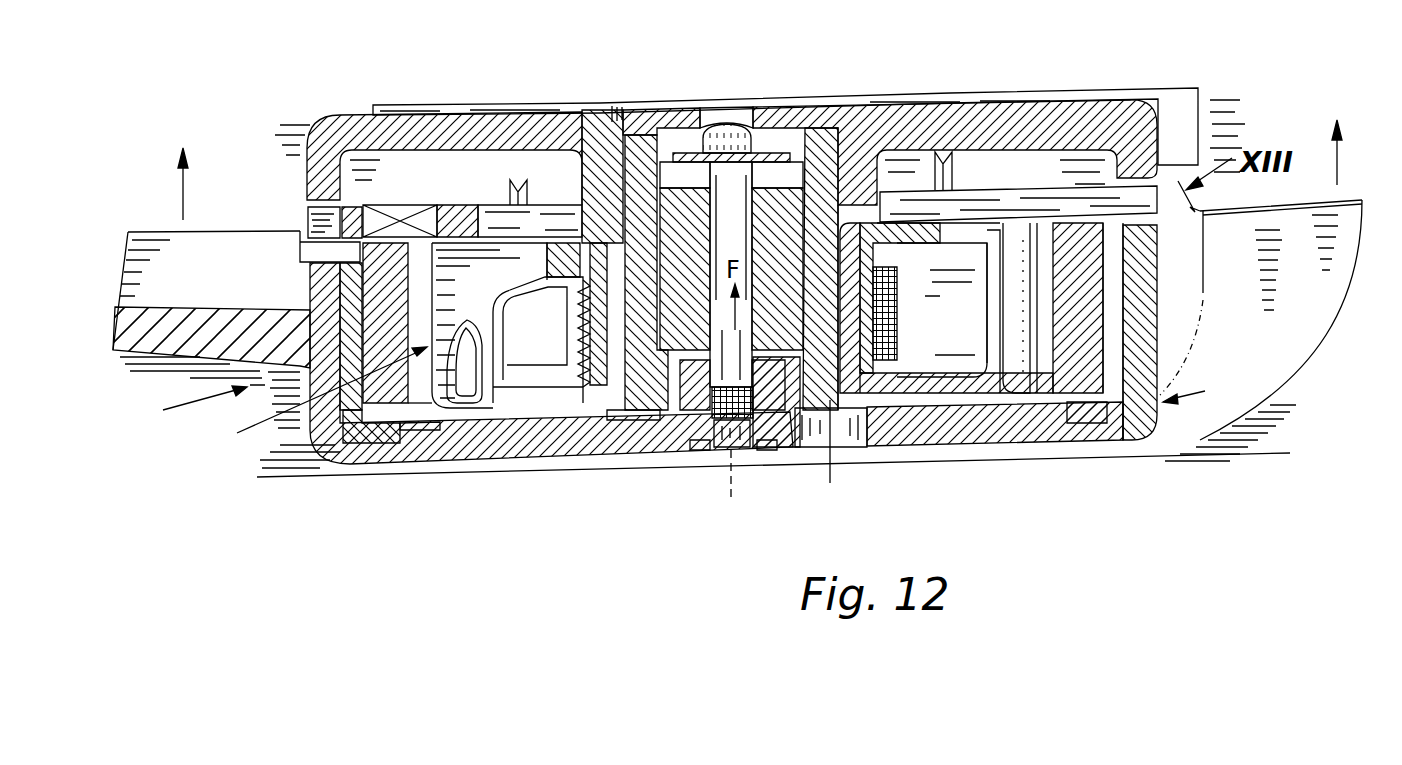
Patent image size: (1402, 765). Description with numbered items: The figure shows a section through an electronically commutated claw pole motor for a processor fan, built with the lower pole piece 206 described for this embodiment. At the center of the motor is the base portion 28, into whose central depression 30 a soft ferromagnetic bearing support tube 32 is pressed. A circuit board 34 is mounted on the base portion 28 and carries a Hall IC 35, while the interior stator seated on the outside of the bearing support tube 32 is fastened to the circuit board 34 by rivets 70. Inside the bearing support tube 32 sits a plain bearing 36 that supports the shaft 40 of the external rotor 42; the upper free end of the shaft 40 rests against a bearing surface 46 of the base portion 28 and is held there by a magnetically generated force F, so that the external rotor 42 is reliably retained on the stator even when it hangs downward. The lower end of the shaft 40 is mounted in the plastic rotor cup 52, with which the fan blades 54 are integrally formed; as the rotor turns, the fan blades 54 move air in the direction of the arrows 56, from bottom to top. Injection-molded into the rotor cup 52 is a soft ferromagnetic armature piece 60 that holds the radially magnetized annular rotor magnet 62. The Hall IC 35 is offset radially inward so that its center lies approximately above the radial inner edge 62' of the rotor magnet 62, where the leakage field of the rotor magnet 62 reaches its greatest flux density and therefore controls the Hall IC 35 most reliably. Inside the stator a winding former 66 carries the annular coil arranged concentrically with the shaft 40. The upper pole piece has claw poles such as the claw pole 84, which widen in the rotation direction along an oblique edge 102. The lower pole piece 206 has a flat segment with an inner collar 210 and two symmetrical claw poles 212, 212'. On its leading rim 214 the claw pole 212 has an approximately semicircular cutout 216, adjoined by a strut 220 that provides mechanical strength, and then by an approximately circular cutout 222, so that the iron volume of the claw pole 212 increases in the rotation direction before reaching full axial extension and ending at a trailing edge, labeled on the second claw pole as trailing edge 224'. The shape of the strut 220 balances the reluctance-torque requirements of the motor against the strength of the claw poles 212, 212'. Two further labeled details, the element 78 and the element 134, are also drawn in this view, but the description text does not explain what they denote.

The base portion 28 is at (1020, 104).
The depression 30 is at (640, 140).
The bearing support tube 32 is at (850, 150).
The circuit board 34 is at (310, 222).
The Hall IC 35 is at (400, 222).
The plain bearing 36 is at (792, 142).
The shaft 40 is at (770, 185).
The external rotor 42 is at (166, 432).
The bearing surface 46 is at (722, 150).
The rotor cup 52 is at (1248, 397).
The fan blades 54 is at (198, 298).
The arrows 56 is at (183, 195).
The armature piece 60 is at (1112, 290).
The rotor magnet 62 is at (347, 336).
The radial inner edge 62' is at (448, 344).
The winding former 66 is at (915, 372).
The rivets 70 is at (512, 185).
The spring 78 is at (578, 300).
The claw pole 84 is at (890, 258).
The oblique edge 102 is at (905, 280).
The latch 134 is at (300, 248).
The lower pole piece 206 is at (490, 353).
The inner collar 210 is at (598, 410).
The claw pole 212 is at (489, 325).
The claw pole 212' is at (1032, 366).
The leading rim 214 is at (552, 245).
The semicircular cutout 216 is at (505, 345).
The strut 220 is at (500, 410).
The circular cutout 222 is at (445, 408).
The trailing edge 224' is at (948, 311).